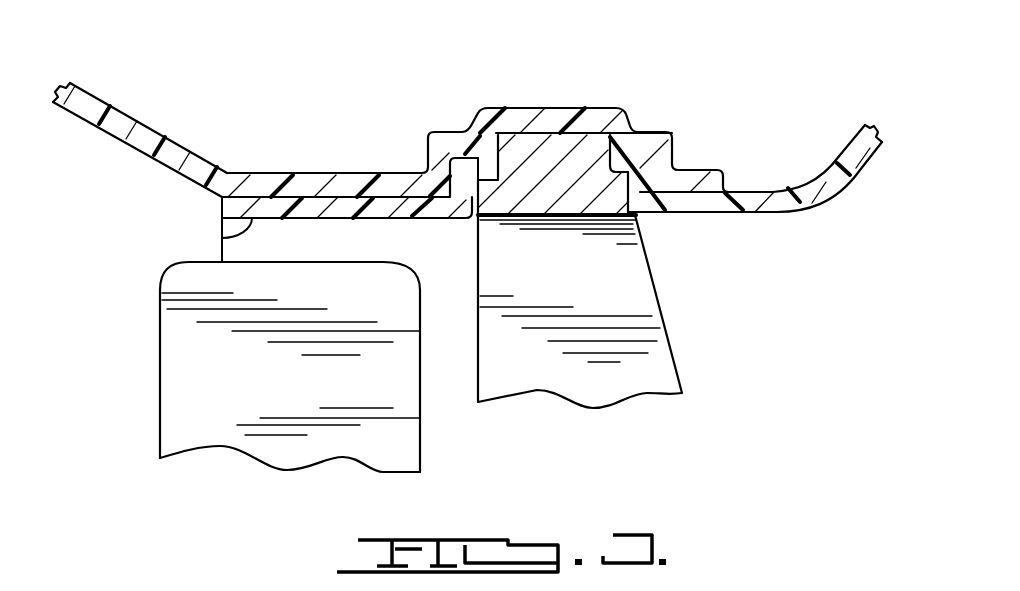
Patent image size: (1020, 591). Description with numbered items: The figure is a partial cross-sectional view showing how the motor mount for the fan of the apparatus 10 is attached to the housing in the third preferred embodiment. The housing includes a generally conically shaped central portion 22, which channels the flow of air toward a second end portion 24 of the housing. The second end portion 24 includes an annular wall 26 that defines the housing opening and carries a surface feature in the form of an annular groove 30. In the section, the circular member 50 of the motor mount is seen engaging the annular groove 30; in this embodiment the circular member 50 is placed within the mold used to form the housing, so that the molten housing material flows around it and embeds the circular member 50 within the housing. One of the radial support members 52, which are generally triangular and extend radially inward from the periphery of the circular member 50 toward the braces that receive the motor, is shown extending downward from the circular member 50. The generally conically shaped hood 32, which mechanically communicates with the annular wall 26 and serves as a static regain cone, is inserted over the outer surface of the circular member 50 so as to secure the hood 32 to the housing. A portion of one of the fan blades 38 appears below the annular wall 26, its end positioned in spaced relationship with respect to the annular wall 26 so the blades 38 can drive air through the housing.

The apparatus 10 is at (568, 92).
The central portion 22 is at (812, 196).
The second end portion 24 is at (334, 180).
The annular wall 26 is at (222, 234).
The annular groove 30 is at (474, 128).
The hood 32 is at (167, 148).
The blades 38 is at (173, 405).
The circular member 50 is at (592, 168).
The radial support members 52 is at (640, 298).